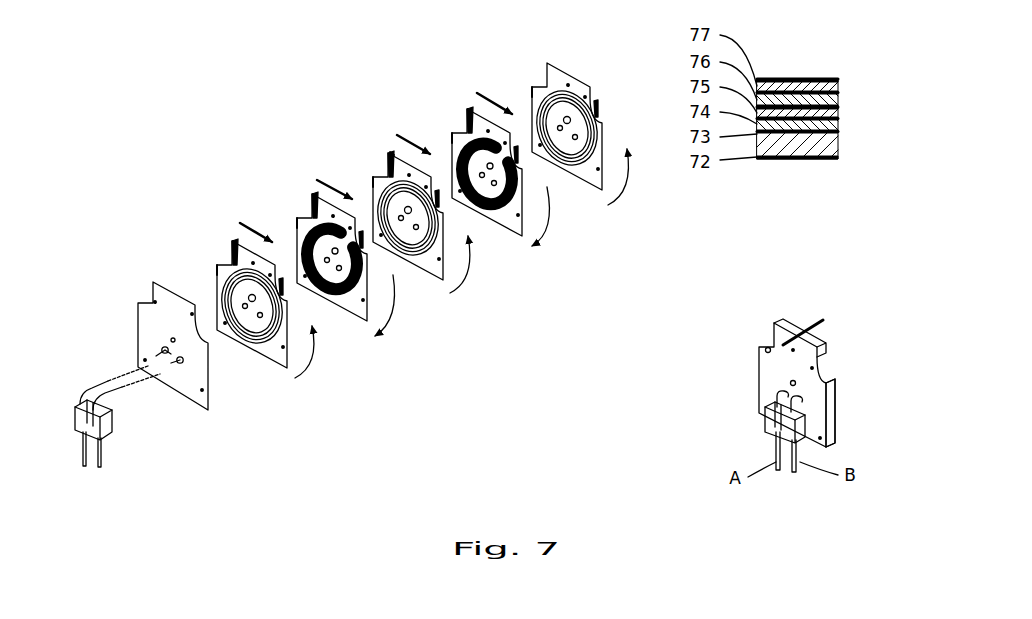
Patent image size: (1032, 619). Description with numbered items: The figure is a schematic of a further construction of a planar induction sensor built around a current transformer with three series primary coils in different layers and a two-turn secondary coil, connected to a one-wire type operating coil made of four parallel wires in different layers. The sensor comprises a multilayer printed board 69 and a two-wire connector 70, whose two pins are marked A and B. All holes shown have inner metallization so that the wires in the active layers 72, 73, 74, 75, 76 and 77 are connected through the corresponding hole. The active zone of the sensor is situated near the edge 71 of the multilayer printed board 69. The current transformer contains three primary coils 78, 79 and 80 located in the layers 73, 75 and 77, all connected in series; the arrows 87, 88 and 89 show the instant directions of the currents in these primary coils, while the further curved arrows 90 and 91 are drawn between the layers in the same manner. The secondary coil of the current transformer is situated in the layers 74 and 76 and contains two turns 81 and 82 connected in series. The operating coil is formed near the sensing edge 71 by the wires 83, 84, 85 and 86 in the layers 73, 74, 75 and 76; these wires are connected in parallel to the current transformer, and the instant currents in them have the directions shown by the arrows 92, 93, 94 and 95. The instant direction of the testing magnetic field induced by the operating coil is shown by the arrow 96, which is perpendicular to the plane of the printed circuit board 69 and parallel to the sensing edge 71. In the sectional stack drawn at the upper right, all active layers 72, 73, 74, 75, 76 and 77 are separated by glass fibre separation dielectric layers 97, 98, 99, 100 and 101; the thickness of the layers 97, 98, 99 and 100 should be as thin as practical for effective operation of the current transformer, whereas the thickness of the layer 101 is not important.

The multilayer printed board 69 is at (773, 378).
The two-wire connector 70 is at (765, 420).
The edge 71 is at (813, 338).
The active layer 72 is at (172, 395).
The active layer 73 is at (257, 353).
The active layer 74 is at (335, 303).
The active layer 75 is at (408, 258).
The active layer 76 is at (490, 216).
The active layer 77 is at (568, 172).
The primary coil 78 is at (217, 262).
The primary coil 79 is at (375, 177).
The primary coil 80 is at (534, 87).
The turn of secondary coil 81 is at (300, 218).
The turn of secondary coil 82 is at (455, 133).
The wire of operating coil 83 is at (233, 242).
The wire of operating coil 84 is at (315, 193).
The wire of operating coil 85 is at (392, 152).
The wire of operating coil 86 is at (470, 108).
The arrow 87 is at (310, 335).
The arrow 88 is at (468, 245).
The arrow 89 is at (628, 160).
The stacking direction arrow 90 is at (392, 285).
The stacking direction arrow 91 is at (547, 198).
The arrow 92 is at (252, 222).
The arrow 93 is at (338, 180).
The arrow 94 is at (418, 140).
The arrow 95 is at (497, 98).
The arrow 96 is at (807, 322).
The glass fibre separation dielectric layer 97 is at (838, 82).
The glass fibre separation dielectric layer 98 is at (838, 95).
The glass fibre separation dielectric layer 99 is at (838, 108).
The glass fibre separation dielectric layer 100 is at (838, 120).
The glass fibre separation dielectric layer 101 is at (838, 133).
The terminal pin A is at (82, 455).
The terminal pin B is at (103, 457).